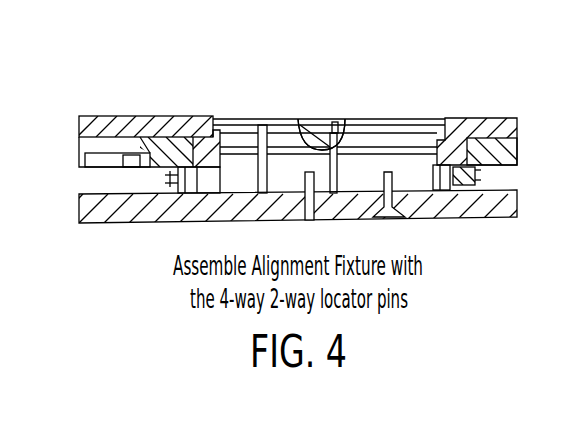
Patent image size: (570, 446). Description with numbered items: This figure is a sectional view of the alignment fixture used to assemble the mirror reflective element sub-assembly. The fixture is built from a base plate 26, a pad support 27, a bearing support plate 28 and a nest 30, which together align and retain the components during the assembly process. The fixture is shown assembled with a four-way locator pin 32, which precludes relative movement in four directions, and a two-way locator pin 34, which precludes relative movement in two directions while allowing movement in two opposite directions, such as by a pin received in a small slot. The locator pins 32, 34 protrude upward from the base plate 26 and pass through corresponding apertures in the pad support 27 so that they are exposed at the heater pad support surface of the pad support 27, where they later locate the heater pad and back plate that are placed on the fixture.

The base plate 26 is at (170, 170).
The pad support 27 is at (408, 175).
The bearing support plate 28 is at (483, 125).
The nest 30 is at (175, 117).
The 4-way locator pin 32 is at (298, 137).
The 2-way locator pin 34 is at (321, 134).